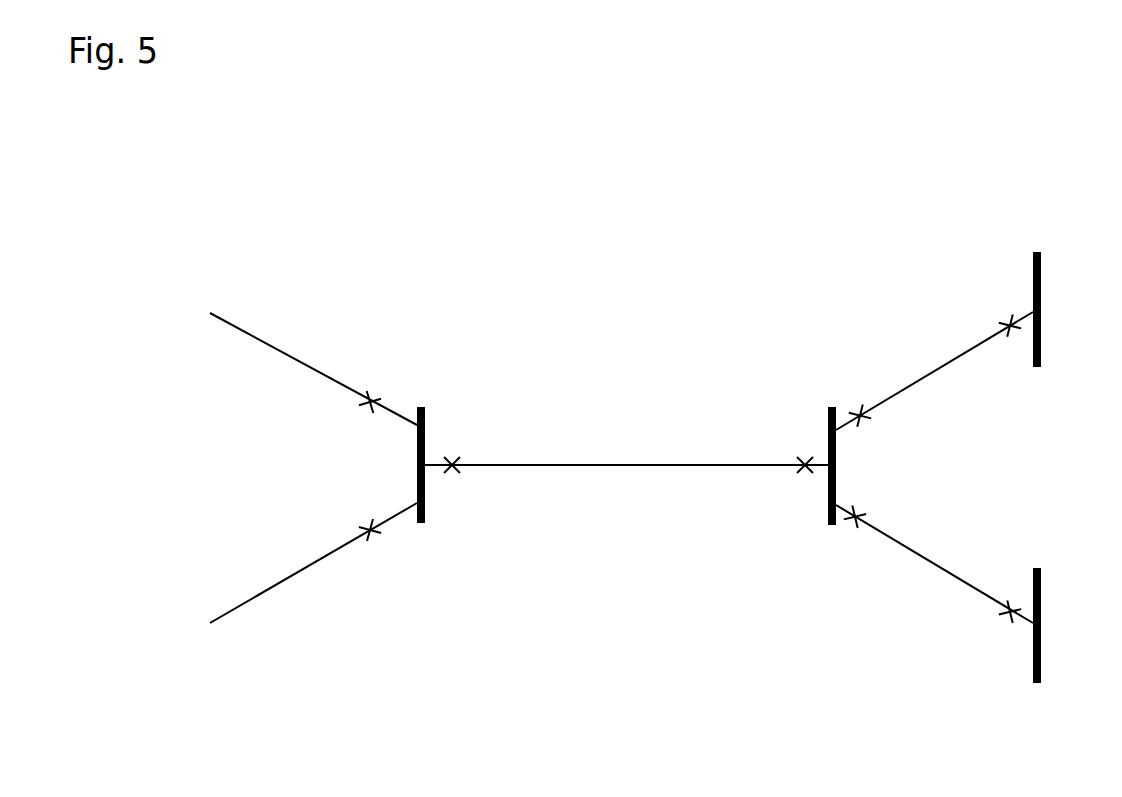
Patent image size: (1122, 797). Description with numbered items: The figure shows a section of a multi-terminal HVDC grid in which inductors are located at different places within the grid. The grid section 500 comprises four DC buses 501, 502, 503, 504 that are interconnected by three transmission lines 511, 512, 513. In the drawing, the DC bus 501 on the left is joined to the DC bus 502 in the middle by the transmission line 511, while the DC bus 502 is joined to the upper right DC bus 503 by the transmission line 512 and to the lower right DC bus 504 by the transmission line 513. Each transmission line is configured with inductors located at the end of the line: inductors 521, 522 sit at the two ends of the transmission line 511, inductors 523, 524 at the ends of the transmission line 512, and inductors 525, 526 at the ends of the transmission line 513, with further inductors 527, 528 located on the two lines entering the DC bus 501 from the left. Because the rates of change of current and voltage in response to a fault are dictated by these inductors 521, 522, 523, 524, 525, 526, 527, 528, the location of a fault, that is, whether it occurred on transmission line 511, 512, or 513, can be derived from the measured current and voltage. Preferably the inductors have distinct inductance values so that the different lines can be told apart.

The grid section 500 is at (280, 769).
The DC bus 501 is at (390, 465).
The DC bus 502 is at (865, 466).
The DC bus 503 is at (1069, 309).
The DC bus 504 is at (1069, 625).
The transmission line 511 is at (626, 445).
The transmission line 512 is at (934, 371).
The transmission line 513 is at (934, 564).
The inductor 521 is at (463, 488).
The inductor 522 is at (791, 488).
The inductor 523 is at (857, 395).
The inductor 524 is at (991, 302).
The inductor 525 is at (843, 540).
The inductor 526 is at (991, 633).
The inductor 527 is at (376, 381).
The inductor 528 is at (378, 554).